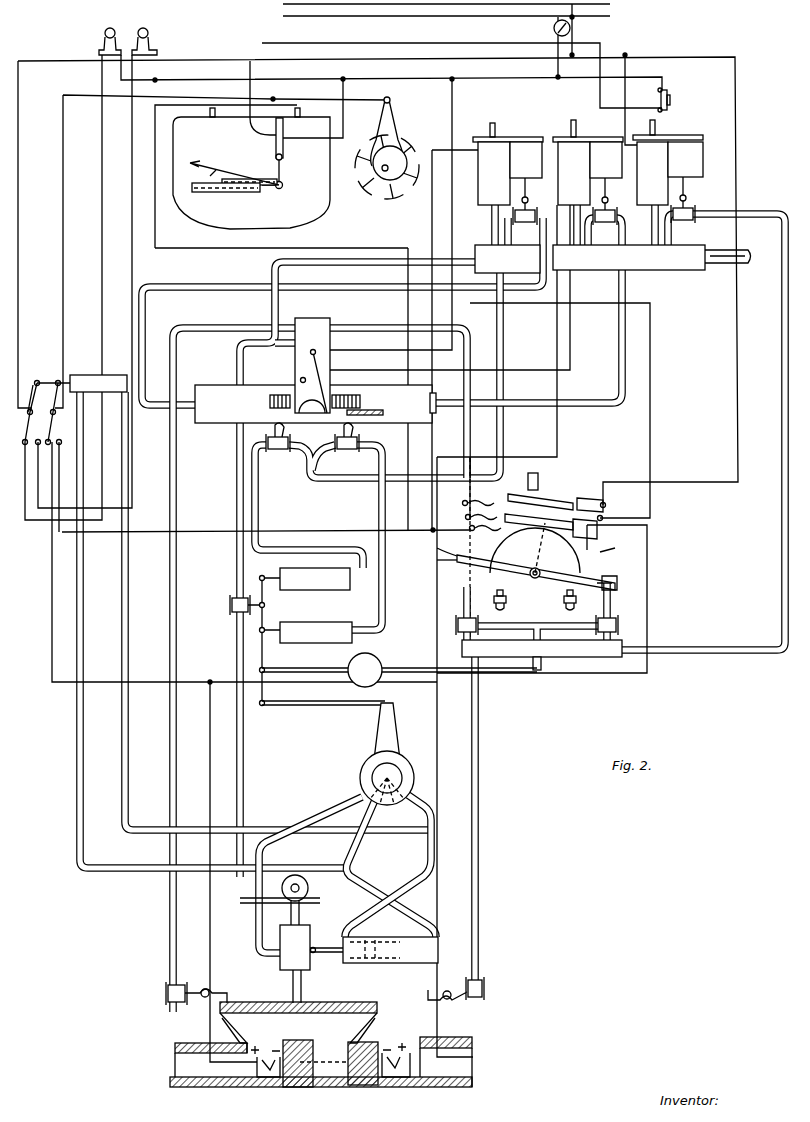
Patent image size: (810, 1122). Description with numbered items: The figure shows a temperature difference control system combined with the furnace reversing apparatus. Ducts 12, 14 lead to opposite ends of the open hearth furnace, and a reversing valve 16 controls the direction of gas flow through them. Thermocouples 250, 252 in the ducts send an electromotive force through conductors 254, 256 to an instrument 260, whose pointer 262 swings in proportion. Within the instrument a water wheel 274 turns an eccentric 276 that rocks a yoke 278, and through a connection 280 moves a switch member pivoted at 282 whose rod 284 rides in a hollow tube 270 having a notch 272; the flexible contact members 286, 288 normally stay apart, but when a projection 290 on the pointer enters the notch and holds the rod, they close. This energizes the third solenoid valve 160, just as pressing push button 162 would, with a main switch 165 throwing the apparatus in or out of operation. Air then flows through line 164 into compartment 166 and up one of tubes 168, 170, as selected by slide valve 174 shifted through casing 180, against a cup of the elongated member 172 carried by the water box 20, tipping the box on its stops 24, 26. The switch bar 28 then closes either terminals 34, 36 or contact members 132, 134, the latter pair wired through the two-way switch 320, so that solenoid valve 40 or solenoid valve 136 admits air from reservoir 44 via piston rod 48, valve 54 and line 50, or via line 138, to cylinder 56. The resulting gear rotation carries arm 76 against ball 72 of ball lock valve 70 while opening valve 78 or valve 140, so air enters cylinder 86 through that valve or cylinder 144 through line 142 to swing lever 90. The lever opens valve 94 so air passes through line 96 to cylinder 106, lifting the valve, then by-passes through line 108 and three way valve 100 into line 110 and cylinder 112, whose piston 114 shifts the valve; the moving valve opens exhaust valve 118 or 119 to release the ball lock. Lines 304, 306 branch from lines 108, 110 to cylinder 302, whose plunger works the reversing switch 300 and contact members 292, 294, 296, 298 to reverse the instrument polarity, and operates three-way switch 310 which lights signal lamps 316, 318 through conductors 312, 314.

The duct 12 is at (175, 1062).
The duct 14 is at (472, 1062).
The reversing valve 16 is at (322, 1002).
The water box 20 is at (542, 570).
The stop 24 is at (506, 600).
The stop 26 is at (566, 605).
The switch bar 28 is at (550, 498).
The terminal 34 is at (597, 498).
The terminal 36 is at (601, 516).
The solenoid valve 40 is at (494, 150).
The compressed air reservoir 44 is at (652, 257).
The piston rod 48 is at (526, 178).
The line 50 is at (507, 259).
The valve 54 is at (525, 224).
The cylinder 56 is at (210, 385).
The ball lock valve 70 is at (328, 330).
The ball 72 is at (318, 470).
The lever or arm 76 is at (372, 408).
The valve 78 is at (360, 440).
The cylinder 86 is at (316, 632).
The lever 90 is at (268, 692).
The valve 94 is at (230, 605).
The line 96 is at (244, 743).
The three way valve 100 is at (396, 770).
The cylinder 106 is at (291, 939).
The line 108 is at (314, 818).
The line 110 is at (436, 848).
The cylinder 112 is at (390, 963).
The piston 114 is at (382, 950).
The valve 118 is at (484, 990).
The exhaust valve 119 is at (166, 994).
The contact member 132 is at (533, 473).
The contact member 134 is at (462, 500).
The solenoid valve 136 is at (570, 138).
The line 138 is at (627, 291).
The valve 140 is at (278, 452).
The line 142 is at (318, 548).
The cylinder 144 is at (315, 579).
The solenoid valve 160 is at (655, 160).
The push button 162 is at (671, 97).
The line 164 is at (781, 383).
The switch 165 is at (571, 30).
The compartment 166 is at (612, 658).
The tube 168 is at (462, 609).
The tube 170 is at (618, 600).
The elongated member 172 is at (620, 582).
The slide valve 174 is at (540, 666).
The casing 180 is at (399, 670).
The thermocouple 250 is at (268, 1078).
The thermocouple 252 is at (398, 1078).
The conductor 254 is at (212, 925).
The conductor 256 is at (480, 905).
The instrument 260 is at (300, 217).
The pointer 262 is at (240, 176).
The hollow tube 270 is at (217, 192).
The notch 272 is at (213, 182).
The water wheel 274 is at (398, 198).
The eccentric 276 is at (400, 150).
The yoke 278 is at (399, 118).
The connection 280 is at (368, 97).
The pivot 282 is at (283, 157).
The rod 284 is at (281, 187).
The contact member 286 is at (250, 61).
The contact member 288 is at (283, 125).
The projection 290 is at (213, 170).
The contact member 292 is at (446, 551).
The contact member 294 is at (452, 565).
The contact member 296 is at (542, 599).
The contact member 298 is at (615, 553).
The two-way reversing switch 300 is at (45, 380).
The cylinder 302 is at (92, 375).
The line 304 is at (84, 633).
The line 306 is at (129, 597).
The three-way switch 310 is at (30, 415).
The conductor 312 is at (52, 540).
The conductor 314 is at (140, 457).
The signal lamp 316 is at (104, 35).
The signal lamp 318 is at (150, 35).
The two-way switch 320 is at (322, 362).